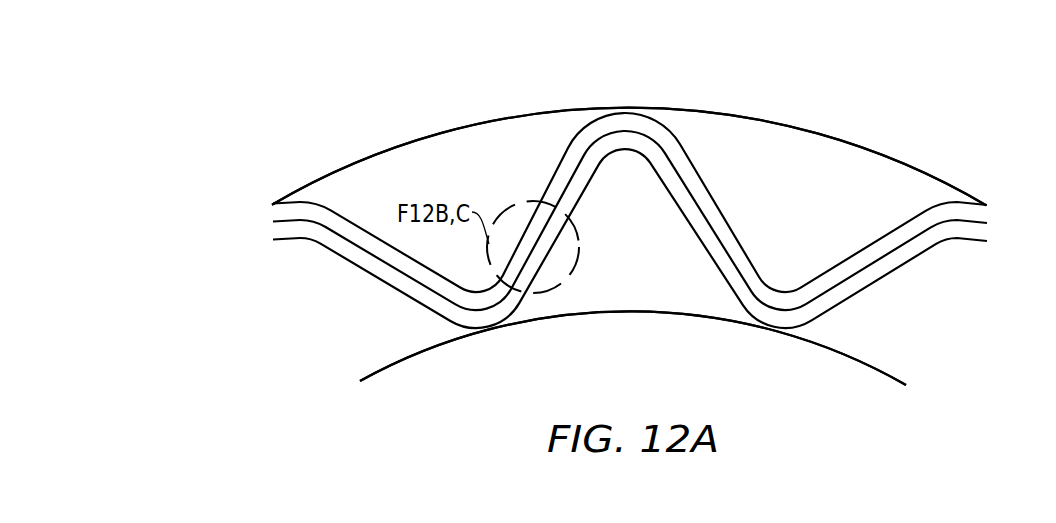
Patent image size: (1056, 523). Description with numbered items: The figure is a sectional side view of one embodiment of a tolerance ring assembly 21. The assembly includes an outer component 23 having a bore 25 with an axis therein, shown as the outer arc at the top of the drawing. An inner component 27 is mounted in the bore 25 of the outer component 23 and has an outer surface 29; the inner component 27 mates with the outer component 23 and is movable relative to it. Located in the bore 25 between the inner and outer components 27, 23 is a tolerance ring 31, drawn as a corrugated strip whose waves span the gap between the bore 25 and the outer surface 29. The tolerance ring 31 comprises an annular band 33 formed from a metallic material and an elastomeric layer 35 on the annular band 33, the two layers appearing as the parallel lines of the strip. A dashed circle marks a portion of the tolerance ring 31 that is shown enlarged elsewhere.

The tolerance ring assembly 21 is at (981, 109).
The outer component 23 is at (720, 86).
The bore 25 is at (803, 131).
The inner component 27 is at (657, 347).
The outer surface 29 is at (646, 311).
The tolerance ring 31 is at (630, 220).
The annular band 33 is at (567, 172).
The elastomeric layer 35 is at (575, 193).